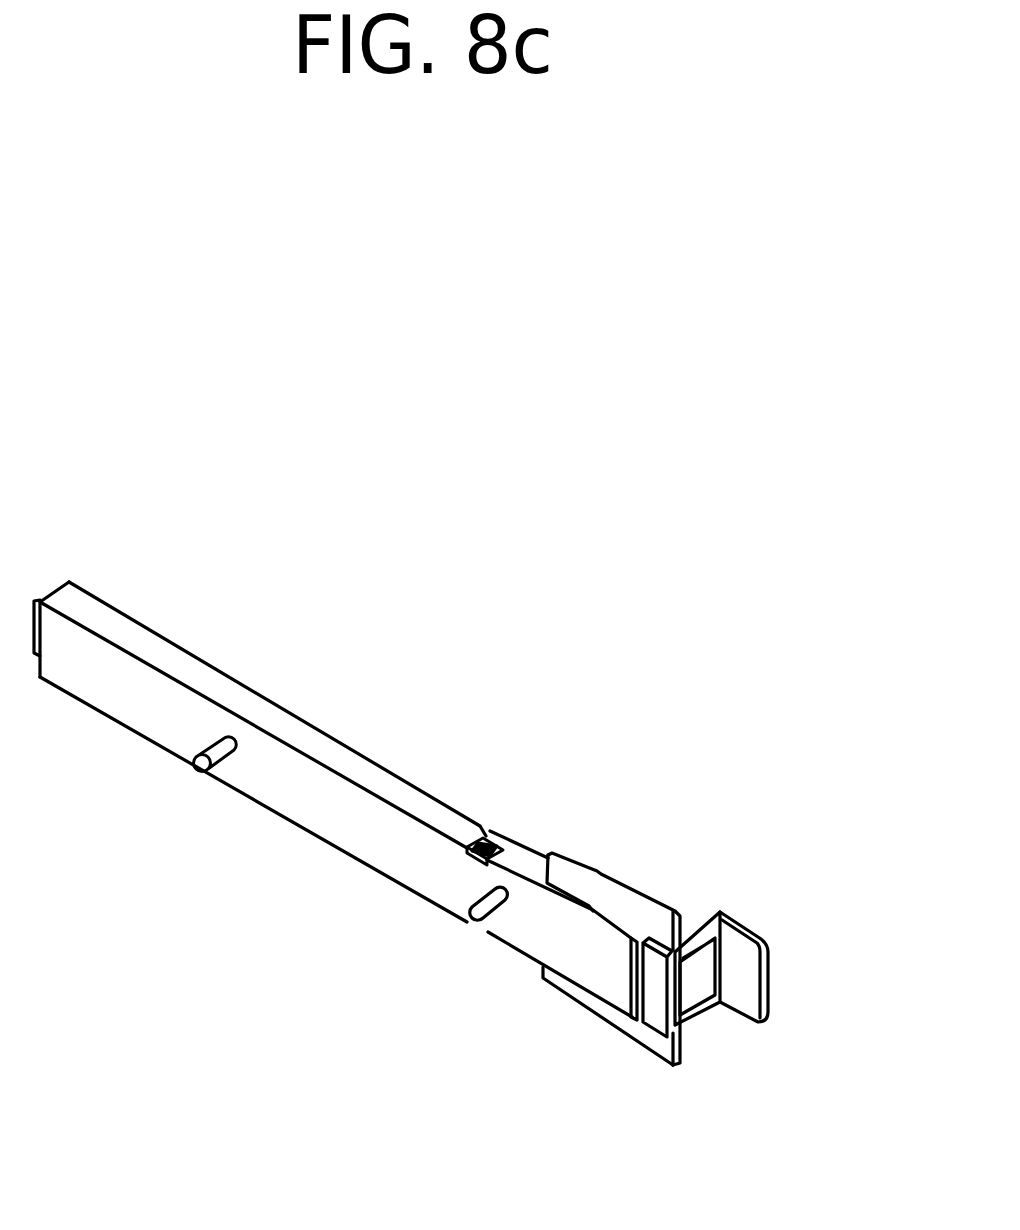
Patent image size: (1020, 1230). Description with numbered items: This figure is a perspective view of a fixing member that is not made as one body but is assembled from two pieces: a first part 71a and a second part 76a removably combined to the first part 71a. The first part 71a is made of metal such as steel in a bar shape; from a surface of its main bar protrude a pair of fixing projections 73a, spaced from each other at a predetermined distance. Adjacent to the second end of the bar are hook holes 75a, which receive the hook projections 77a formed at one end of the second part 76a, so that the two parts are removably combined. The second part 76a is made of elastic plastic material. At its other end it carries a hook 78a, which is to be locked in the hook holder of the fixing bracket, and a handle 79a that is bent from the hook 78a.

The first part 71a is at (262, 866).
The fixing projections 73a is at (193, 762).
The hook holes 75a is at (482, 832).
The hook projections 77a is at (496, 845).
The second part 76a is at (715, 946).
The hook 78a is at (692, 988).
The handle 79a is at (752, 930).